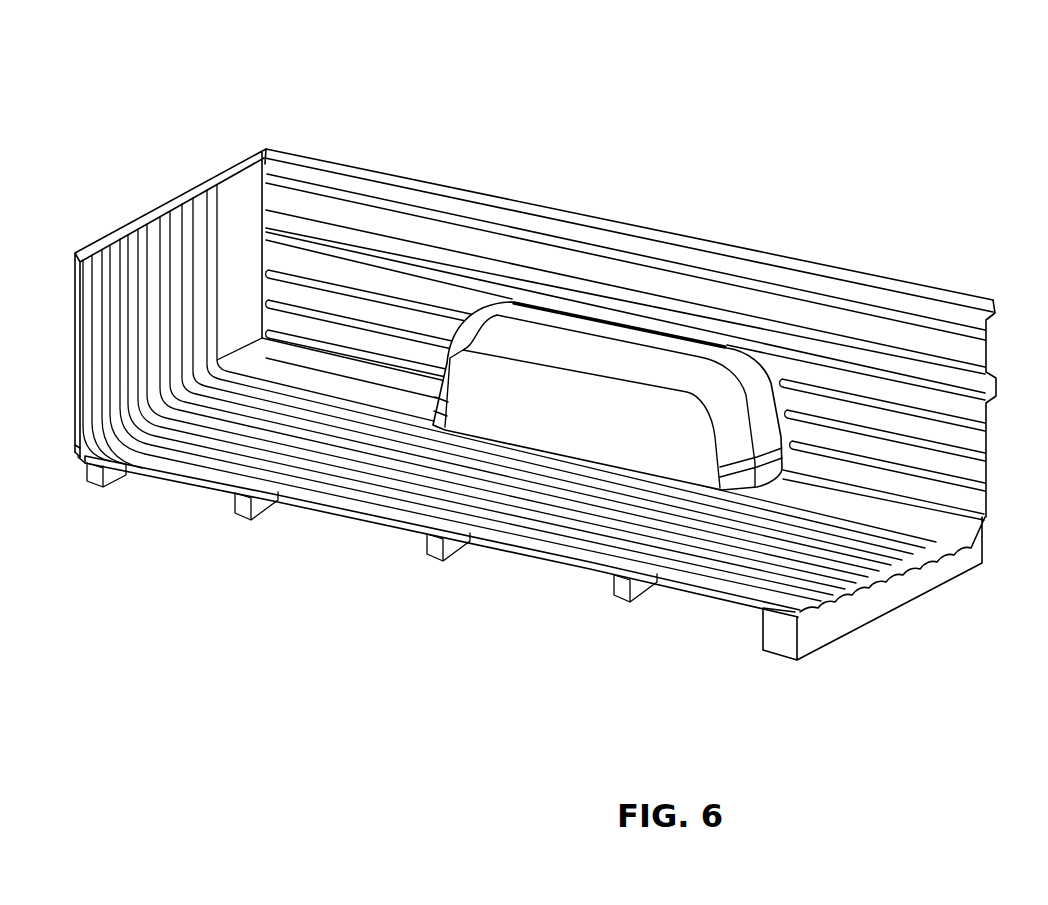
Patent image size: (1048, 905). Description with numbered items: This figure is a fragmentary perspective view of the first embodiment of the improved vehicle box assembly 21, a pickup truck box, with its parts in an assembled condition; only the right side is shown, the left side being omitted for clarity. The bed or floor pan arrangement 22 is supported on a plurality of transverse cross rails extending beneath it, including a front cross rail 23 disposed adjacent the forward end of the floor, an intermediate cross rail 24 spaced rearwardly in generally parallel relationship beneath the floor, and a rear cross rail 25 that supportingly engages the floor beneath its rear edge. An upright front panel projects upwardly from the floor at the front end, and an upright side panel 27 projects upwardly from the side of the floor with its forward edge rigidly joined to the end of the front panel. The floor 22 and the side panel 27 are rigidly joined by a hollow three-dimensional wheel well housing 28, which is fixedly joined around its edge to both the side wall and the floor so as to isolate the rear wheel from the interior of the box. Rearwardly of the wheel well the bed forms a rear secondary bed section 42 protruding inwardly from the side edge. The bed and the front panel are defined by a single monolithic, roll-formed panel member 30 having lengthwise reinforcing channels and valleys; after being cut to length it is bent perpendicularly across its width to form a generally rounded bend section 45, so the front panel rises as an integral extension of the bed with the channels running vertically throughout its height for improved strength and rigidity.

The vehicle box assembly 21 is at (527, 366).
The bed or floor pan arrangement 22 is at (388, 508).
The front cross rail 23 is at (95, 486).
The intermediate cross rail 24 is at (620, 599).
The rear cross rail 25 is at (873, 601).
The upright side panel 27 is at (858, 323).
The wheel well cover or housing 28 is at (619, 335).
The monolithic one-piece panel member 30 is at (197, 487).
The rear secondary bed section 42 is at (937, 520).
The bend section 45 is at (78, 458).